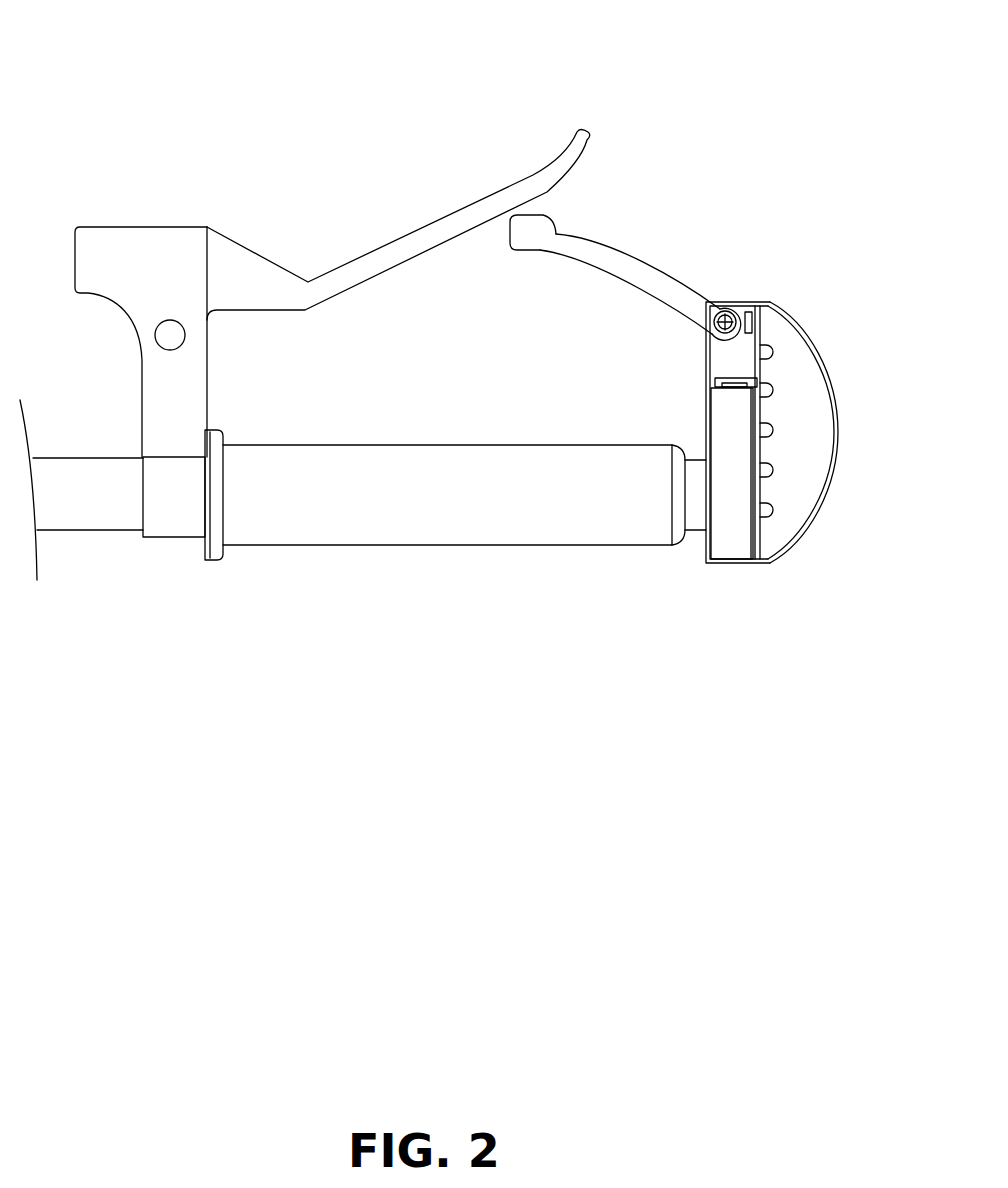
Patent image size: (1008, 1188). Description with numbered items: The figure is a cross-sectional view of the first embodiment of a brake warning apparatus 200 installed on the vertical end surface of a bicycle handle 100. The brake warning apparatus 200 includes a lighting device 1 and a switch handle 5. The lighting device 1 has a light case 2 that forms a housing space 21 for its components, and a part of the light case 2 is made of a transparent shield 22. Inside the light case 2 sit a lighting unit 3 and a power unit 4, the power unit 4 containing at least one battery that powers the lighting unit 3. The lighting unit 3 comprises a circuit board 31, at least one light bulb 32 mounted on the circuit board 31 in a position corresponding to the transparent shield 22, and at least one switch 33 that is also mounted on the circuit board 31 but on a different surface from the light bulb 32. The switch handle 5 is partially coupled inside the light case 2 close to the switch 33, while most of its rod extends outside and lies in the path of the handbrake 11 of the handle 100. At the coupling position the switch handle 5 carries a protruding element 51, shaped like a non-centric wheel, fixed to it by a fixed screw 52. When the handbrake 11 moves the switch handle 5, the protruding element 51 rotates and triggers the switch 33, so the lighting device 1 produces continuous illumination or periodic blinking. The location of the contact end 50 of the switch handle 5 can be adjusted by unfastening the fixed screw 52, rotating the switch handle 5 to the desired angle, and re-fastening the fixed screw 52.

The handle 100 is at (402, 500).
The handbrake 11 is at (407, 248).
The contact end 50 is at (533, 232).
The switch handle 5 is at (630, 262).
The fixed screw 52 is at (700, 303).
The protruding element 51 is at (713, 338).
The housing space 21 is at (730, 358).
The lighting device 1 is at (725, 529).
The light case 2 is at (706, 556).
The transparent shield 22 is at (797, 542).
The power unit 4 is at (737, 532).
The lighting unit 3 is at (793, 320).
The switch 33 is at (752, 300).
The circuit board 31 is at (765, 330).
The light bulb 32 is at (777, 390).
The brake warning apparatus 200 is at (855, 480).